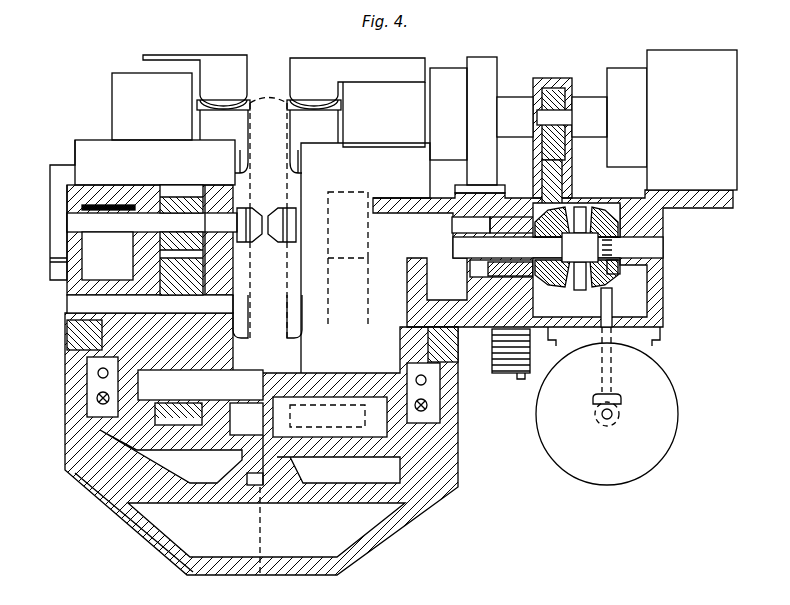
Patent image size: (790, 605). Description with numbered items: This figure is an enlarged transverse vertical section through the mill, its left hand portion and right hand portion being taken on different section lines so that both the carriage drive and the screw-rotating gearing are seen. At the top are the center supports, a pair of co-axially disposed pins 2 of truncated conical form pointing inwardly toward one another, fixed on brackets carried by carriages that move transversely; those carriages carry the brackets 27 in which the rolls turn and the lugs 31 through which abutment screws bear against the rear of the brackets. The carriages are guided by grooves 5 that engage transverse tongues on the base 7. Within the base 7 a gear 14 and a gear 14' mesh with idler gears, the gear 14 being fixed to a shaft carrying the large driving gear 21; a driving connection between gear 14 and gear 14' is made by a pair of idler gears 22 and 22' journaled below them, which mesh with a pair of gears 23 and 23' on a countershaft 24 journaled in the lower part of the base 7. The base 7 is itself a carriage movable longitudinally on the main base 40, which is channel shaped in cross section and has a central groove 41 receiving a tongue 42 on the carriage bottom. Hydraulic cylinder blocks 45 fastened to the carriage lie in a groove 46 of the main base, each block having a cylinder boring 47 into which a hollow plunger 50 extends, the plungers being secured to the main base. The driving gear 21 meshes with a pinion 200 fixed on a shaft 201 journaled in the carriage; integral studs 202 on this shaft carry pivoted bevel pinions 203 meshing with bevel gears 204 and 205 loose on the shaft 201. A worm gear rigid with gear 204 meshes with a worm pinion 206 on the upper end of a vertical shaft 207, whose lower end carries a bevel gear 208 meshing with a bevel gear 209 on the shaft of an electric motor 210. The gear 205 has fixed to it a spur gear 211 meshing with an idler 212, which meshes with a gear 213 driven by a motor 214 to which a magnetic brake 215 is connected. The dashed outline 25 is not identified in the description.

The pins 2 is at (276, 210).
The grooves 5 is at (50, 166).
The base 7 is at (67, 297).
The gear 14 is at (358, 244).
The gear 14' is at (181, 182).
The driving gear 21 is at (511, 365).
The idler gear 22 is at (365, 258).
The idler gear 22' is at (212, 263).
The gear 23 is at (330, 417).
The gear 23' is at (209, 419).
The countershaft 24 is at (200, 385).
The spring pin 25 is at (267, 219).
The brackets 27 is at (347, 67).
The lugs 31 is at (120, 105).
The main base 40 is at (432, 503).
The central groove 41 is at (287, 487).
The tongue 42 is at (250, 478).
The cylinder blocks 45 is at (87, 386).
The groove 46 is at (73, 416).
The cylinder boring 47 is at (85, 366).
The hollow plunger 50 is at (100, 398).
The pinion 200 is at (490, 226).
The shaft 201 is at (460, 241).
The studs 202 is at (581, 283).
The bevel pinions 203 is at (546, 283).
The bevel gear 204 is at (612, 270).
The bevel gear 205 is at (530, 280).
The worm pinion 206 is at (617, 247).
The vertical shaft 207 is at (613, 310).
The bevel gear 208 is at (623, 396).
The bevel gear 209 is at (620, 416).
The electric motor 210 is at (660, 462).
The spur gear 211 is at (541, 220).
The idler 212 is at (566, 161).
The gear 213 is at (553, 95).
The motor 214 is at (672, 120).
The magnetic brake 215 is at (473, 65).